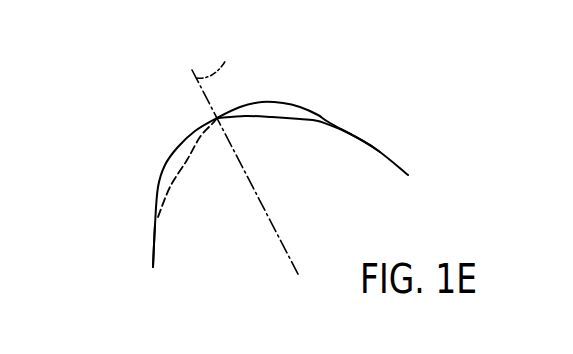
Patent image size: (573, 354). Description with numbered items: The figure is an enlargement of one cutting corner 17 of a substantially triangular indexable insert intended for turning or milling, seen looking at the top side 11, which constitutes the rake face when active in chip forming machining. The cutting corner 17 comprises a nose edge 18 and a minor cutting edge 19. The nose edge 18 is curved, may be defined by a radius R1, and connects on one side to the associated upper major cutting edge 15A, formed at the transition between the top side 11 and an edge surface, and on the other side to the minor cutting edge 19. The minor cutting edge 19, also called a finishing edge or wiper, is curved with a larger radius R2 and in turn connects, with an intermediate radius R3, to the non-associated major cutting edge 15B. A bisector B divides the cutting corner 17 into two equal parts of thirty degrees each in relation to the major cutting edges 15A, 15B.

The top side 11 is at (355, 185).
The upper major cutting edge 15A is at (153, 248).
The non-associated major cutting edge 15B is at (375, 148).
The cutting corner 17 is at (380, 78).
The nose edge 18 is at (177, 148).
The minor cutting edge 19 is at (272, 117).
The bisector B is at (245, 152).